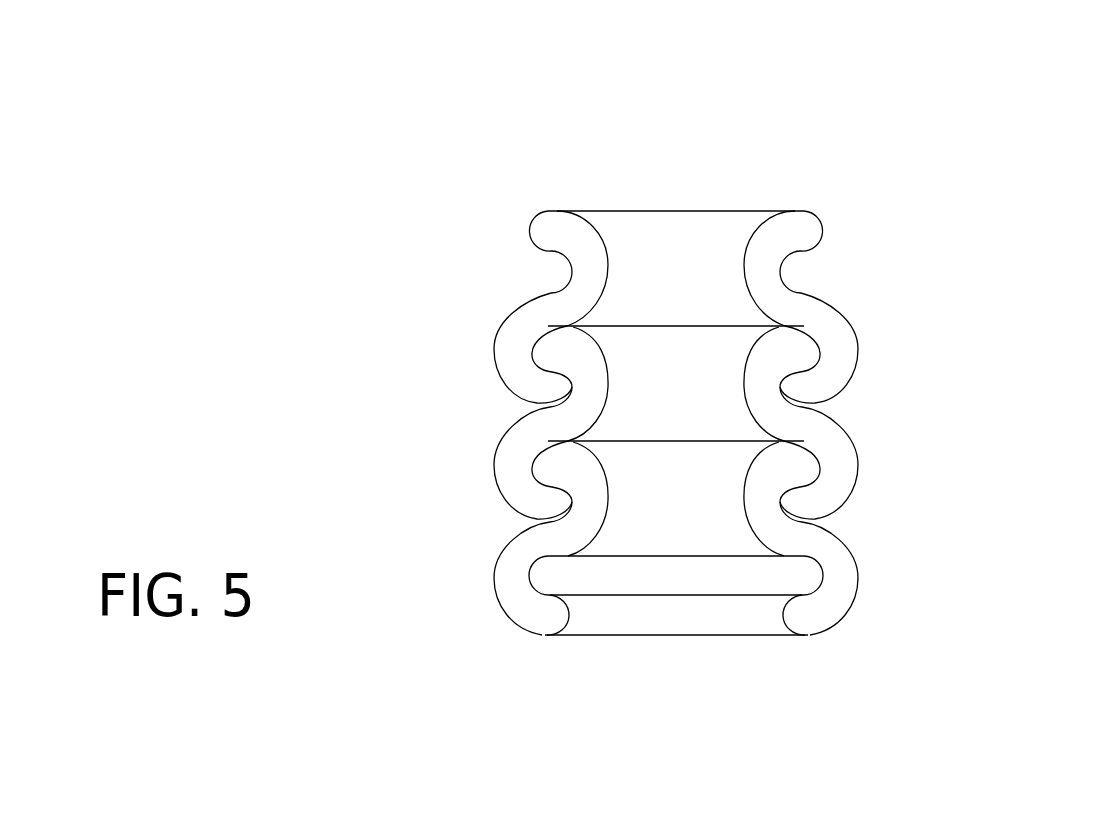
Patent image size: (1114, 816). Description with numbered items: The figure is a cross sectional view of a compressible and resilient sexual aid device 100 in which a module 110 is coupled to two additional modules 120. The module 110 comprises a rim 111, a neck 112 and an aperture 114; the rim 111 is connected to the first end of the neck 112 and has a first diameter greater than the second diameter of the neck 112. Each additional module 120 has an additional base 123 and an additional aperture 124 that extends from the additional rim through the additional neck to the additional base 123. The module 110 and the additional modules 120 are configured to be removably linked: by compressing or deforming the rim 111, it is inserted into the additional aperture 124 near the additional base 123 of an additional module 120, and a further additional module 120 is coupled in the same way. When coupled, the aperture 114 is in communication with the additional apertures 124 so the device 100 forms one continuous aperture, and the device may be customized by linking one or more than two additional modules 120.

The compressible and resilient sexual aid device 100 is at (320, 138).
The module 110 is at (540, 617).
The rim 111 is at (562, 462).
The neck 112 is at (590, 511).
The aperture 114 is at (670, 530).
The additional module 120 is at (777, 353).
The additional base 123 is at (838, 468).
The additional aperture 124 is at (679, 365).